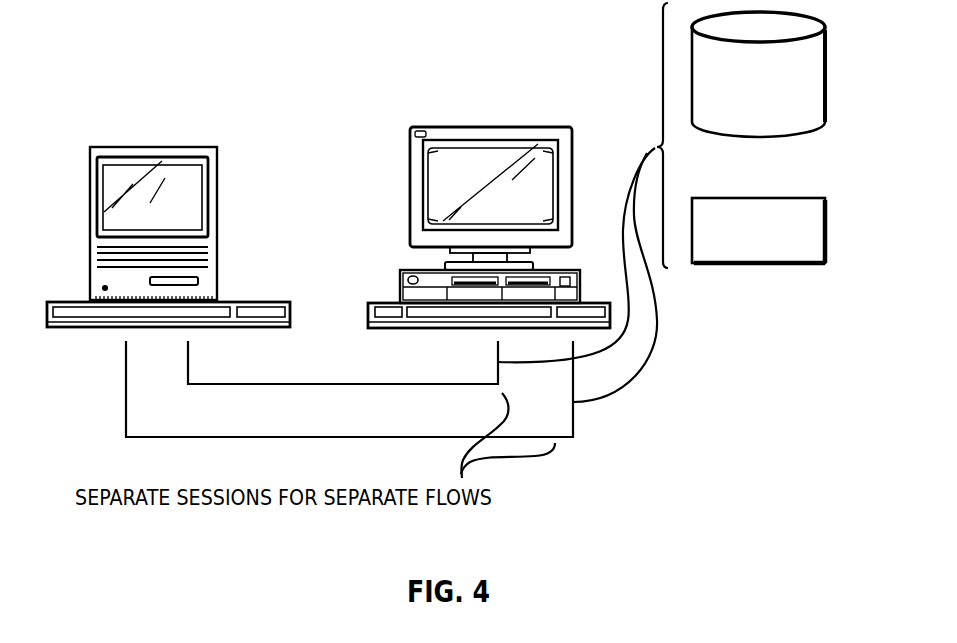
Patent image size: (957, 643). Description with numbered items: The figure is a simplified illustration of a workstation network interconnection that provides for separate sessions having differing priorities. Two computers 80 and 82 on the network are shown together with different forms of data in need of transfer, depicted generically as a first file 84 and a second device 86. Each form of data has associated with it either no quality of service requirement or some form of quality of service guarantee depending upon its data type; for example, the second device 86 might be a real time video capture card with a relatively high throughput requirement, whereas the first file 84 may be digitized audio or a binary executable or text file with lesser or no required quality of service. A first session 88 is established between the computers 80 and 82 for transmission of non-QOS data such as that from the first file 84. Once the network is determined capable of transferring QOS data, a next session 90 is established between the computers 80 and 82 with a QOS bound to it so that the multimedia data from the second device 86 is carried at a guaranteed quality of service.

The computer 80 is at (217, 218).
The computer 82 is at (410, 203).
The file 1 84 is at (825, 75).
The device 2 86 is at (825, 218).
The first session 88 is at (302, 384).
The next session 90 is at (210, 437).